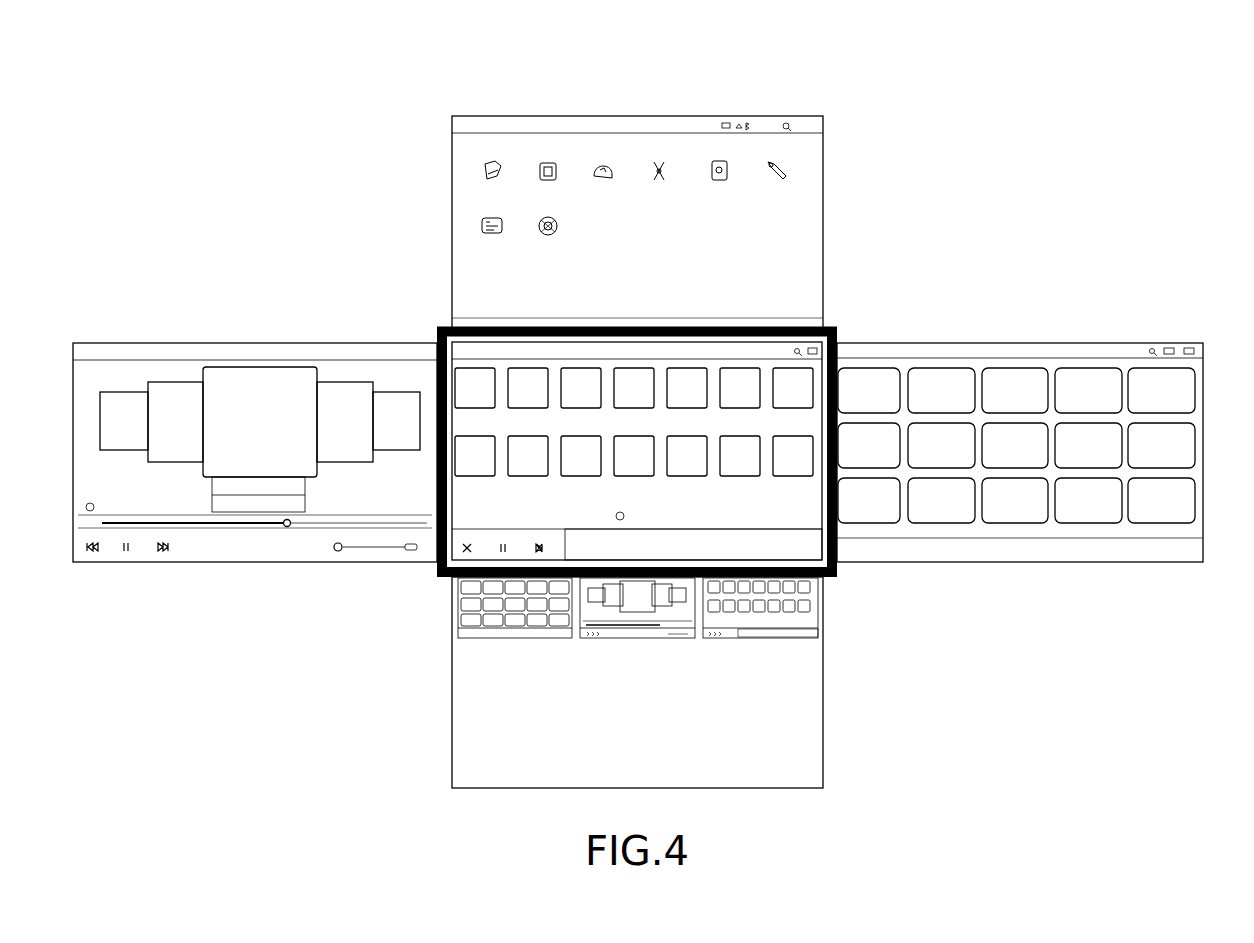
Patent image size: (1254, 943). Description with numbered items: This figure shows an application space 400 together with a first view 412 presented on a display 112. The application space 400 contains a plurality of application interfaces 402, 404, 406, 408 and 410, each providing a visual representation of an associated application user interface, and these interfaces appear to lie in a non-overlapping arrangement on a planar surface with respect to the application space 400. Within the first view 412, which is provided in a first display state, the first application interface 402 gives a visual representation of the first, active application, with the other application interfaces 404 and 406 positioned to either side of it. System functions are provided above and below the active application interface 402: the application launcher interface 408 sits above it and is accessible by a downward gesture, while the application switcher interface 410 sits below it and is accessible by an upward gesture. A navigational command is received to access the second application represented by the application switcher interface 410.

The screen layout of display 400 is at (827, 82).
The current display region (home screen) 402 is at (803, 383).
The left adjacent region (media player screen) 404 is at (313, 343).
The right adjacent region (application list screen) 406 is at (1090, 348).
The upper adjacent region (menu screen) 408 is at (780, 205).
The lower adjacent region (recent applications screen) 410 is at (802, 682).
The boundary of current display region 412 is at (425, 571).
The display unit / touch screen frame 112 is at (838, 573).